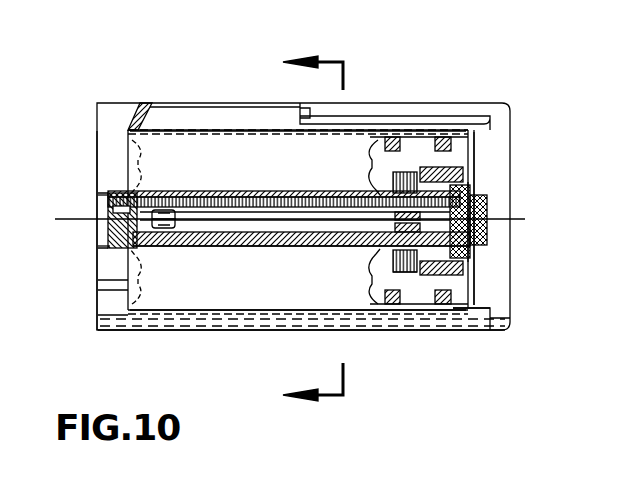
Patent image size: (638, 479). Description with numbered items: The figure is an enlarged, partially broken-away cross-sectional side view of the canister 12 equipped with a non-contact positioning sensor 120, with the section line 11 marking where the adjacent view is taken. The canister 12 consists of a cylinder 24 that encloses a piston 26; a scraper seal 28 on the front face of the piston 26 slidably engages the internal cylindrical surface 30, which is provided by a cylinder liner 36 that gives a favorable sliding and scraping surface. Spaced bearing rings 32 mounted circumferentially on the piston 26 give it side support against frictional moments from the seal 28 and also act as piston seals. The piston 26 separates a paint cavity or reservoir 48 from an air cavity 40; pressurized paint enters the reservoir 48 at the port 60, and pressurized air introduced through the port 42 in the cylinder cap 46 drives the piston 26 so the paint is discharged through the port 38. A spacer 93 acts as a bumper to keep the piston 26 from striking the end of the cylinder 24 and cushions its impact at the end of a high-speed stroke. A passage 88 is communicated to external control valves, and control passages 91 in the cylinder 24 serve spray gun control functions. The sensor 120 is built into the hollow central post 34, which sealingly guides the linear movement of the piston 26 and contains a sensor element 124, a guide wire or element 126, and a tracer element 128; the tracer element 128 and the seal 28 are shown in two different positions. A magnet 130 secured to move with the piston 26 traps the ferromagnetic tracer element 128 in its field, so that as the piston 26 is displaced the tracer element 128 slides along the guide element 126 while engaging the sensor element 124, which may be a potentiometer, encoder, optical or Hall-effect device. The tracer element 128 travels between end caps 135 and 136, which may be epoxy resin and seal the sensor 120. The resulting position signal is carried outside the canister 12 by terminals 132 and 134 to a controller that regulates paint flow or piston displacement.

The section line 11- 11 is at (310, 232).
The canister 12 is at (418, 104).
The cylinder 24 is at (192, 102).
The piston 26 is at (418, 305).
The scraper seal 28 is at (368, 162).
The internal cylindrical surface 30 is at (215, 300).
The bearing rings 32 is at (400, 137).
The central post 34 is at (207, 190).
The cylinder liner 36 is at (178, 250).
The port 38 is at (97, 290).
The cavity 40 is at (463, 290).
The port 42 is at (462, 318).
The cylinder cap 46 is at (495, 175).
The cavity or reservoir 48 is at (278, 315).
The port 60 is at (140, 112).
The passage 88 is at (463, 115).
The control passages 91 is at (113, 335).
The spacer 93 is at (470, 175).
The non-contact positioning sensor 120 is at (261, 150).
The sensor element 124 is at (307, 191).
The guide wire or element 126 is at (243, 213).
The tracer element 128 is at (318, 250).
The magnet 130 is at (415, 303).
The terminal 132 is at (108, 208).
The terminal 134 is at (100, 224).
The end cap 135 is at (97, 247).
The end cap 136 is at (488, 238).